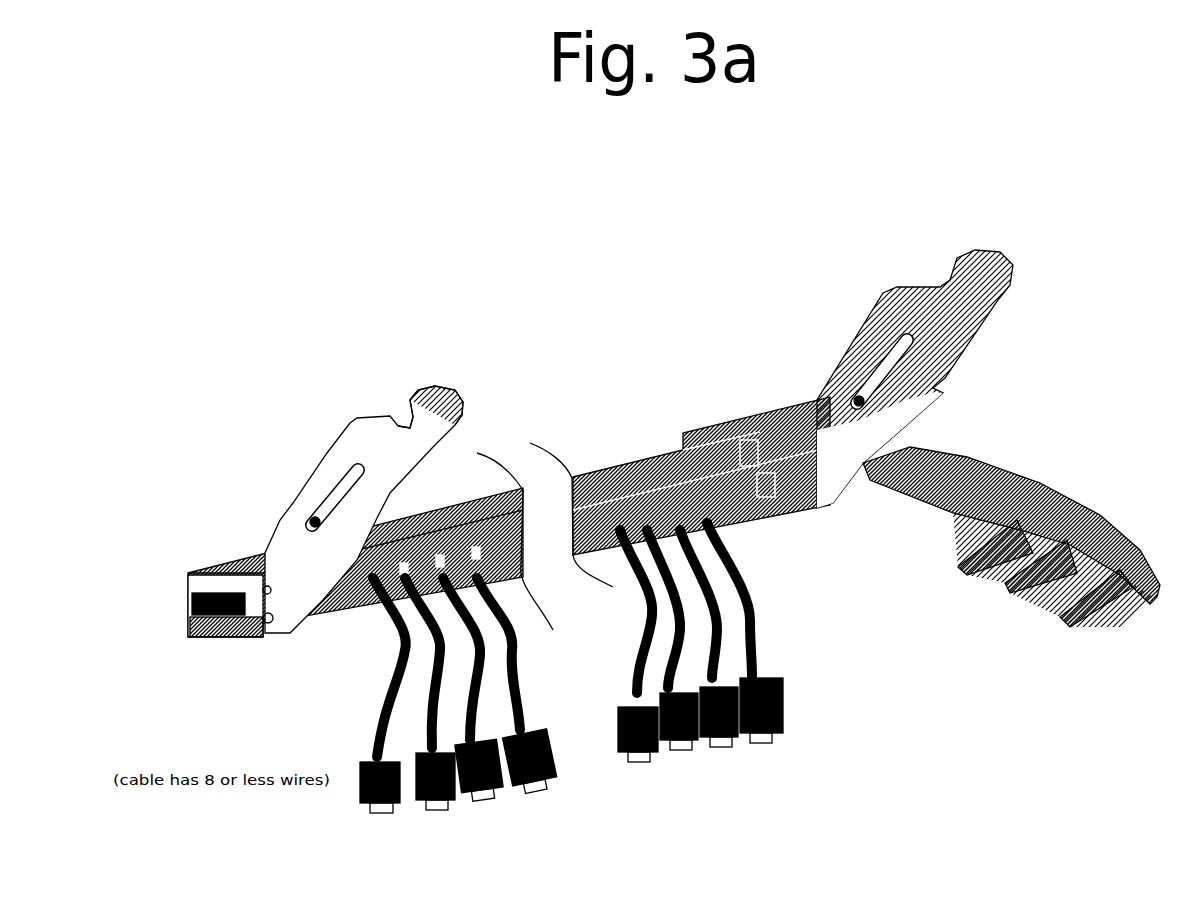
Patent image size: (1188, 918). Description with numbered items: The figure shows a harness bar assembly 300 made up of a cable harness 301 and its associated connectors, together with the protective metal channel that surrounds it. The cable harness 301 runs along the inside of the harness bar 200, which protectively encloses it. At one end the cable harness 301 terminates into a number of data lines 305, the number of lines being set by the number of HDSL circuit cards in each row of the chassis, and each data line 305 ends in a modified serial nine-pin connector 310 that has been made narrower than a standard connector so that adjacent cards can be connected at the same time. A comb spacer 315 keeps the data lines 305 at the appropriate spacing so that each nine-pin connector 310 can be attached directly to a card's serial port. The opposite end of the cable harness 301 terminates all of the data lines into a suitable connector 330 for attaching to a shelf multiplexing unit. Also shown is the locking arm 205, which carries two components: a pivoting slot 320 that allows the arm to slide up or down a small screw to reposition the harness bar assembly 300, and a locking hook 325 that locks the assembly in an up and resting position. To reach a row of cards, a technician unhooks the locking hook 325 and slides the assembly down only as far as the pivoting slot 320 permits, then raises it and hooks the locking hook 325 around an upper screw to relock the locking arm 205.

The harness bar assembly 300 is at (913, 157).
The harness bar 200 is at (607, 462).
The locking arm 205 is at (262, 464).
The pivoting slot 320 is at (318, 513).
The locking hook 325 is at (400, 410).
The data line 305 is at (393, 662).
The modified serial 9-pin connector 310 is at (540, 787).
The comb spacer 315 is at (545, 564).
The cable harness 301 is at (989, 590).
The connector 330 is at (1010, 597).